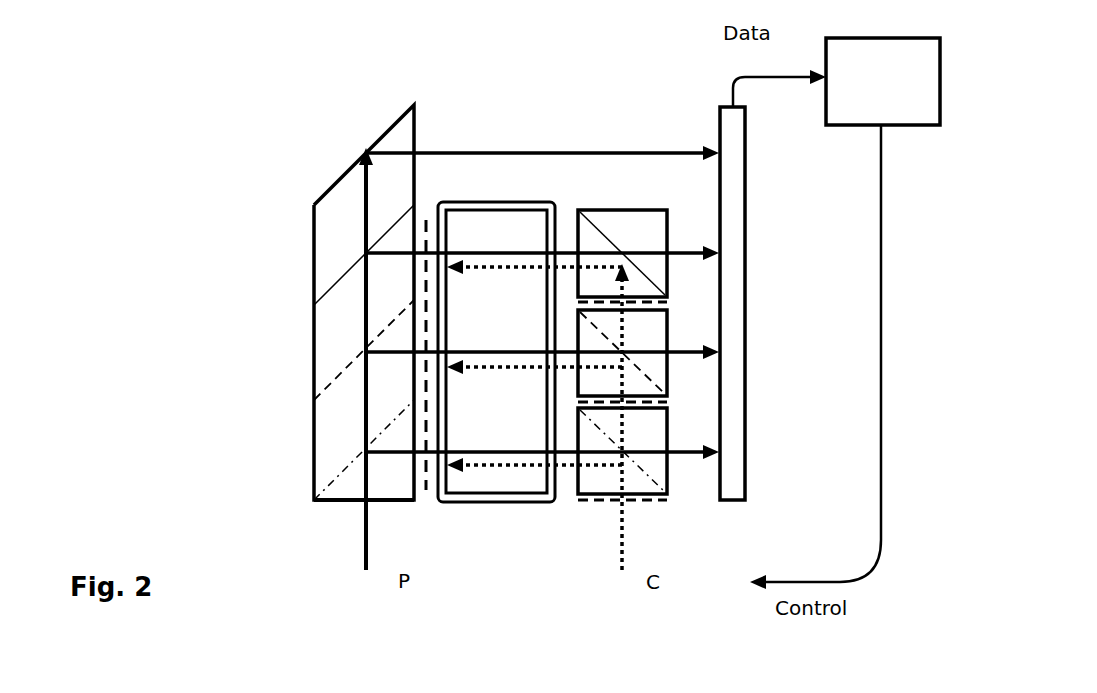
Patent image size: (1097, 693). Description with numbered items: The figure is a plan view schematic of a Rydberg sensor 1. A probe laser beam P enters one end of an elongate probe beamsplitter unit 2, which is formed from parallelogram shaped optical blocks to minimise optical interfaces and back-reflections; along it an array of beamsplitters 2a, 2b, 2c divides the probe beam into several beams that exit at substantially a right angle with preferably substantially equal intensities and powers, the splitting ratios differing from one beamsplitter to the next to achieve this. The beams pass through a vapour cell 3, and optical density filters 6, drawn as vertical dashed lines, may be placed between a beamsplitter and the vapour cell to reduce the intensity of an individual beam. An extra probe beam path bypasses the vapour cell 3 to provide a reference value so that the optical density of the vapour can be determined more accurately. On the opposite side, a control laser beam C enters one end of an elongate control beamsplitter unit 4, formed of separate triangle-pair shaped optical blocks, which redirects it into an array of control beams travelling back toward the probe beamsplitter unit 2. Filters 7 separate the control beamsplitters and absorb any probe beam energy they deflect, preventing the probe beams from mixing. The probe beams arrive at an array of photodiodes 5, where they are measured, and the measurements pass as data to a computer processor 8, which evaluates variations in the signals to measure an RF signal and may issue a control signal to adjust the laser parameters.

The sensor 1 is at (142, 99).
The probe beamsplitter unit 2 is at (364, 282).
The beamsplitter of the probe beamsplitter unit 2a is at (337, 450).
The beamsplitter of the probe beamsplitter unit 2b is at (335, 350).
The beamsplitter of the probe beamsplitter unit 2c is at (337, 255).
The vapour cell 3 is at (496, 378).
The control beamsplitter unit 4 is at (622, 279).
The array of photodiodes 5 is at (732, 328).
The optical density filter 6 is at (426, 488).
The filters 7 is at (666, 300).
The computer processor 8 is at (883, 81).